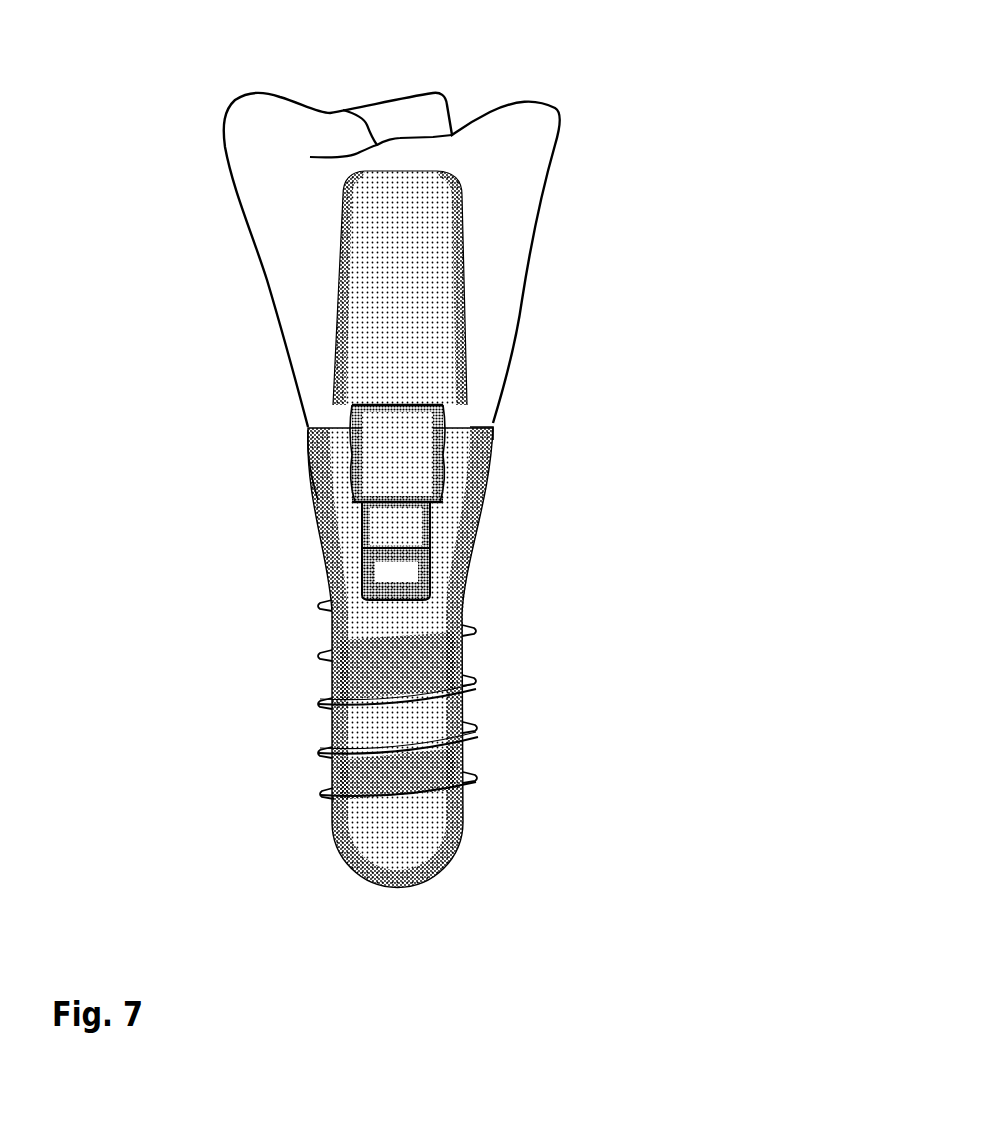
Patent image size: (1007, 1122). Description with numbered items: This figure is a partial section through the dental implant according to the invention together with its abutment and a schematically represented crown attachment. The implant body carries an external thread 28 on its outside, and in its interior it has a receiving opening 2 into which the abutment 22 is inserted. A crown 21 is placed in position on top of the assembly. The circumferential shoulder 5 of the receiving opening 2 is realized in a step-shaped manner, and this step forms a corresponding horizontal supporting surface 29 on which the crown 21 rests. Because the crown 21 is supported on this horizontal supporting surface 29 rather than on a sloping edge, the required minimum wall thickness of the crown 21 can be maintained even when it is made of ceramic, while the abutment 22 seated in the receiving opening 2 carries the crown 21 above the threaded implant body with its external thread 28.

The crown 21 is at (560, 113).
The abutment 22 is at (470, 285).
The horizontal supporting surface 29 is at (494, 426).
The receiving opening 2 is at (494, 498).
The circumferential shoulder 5 is at (313, 485).
The external thread 28 is at (475, 700).